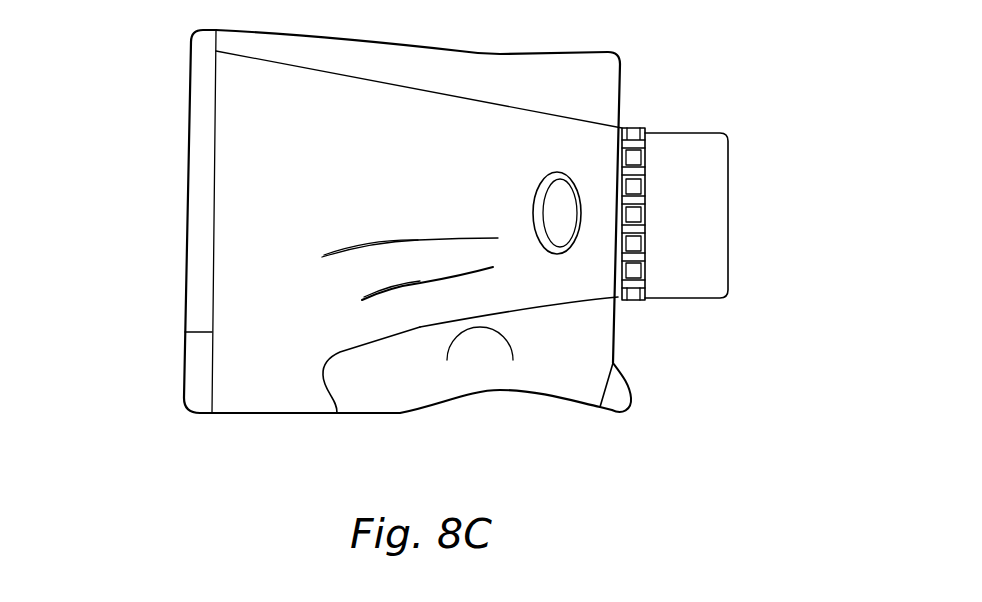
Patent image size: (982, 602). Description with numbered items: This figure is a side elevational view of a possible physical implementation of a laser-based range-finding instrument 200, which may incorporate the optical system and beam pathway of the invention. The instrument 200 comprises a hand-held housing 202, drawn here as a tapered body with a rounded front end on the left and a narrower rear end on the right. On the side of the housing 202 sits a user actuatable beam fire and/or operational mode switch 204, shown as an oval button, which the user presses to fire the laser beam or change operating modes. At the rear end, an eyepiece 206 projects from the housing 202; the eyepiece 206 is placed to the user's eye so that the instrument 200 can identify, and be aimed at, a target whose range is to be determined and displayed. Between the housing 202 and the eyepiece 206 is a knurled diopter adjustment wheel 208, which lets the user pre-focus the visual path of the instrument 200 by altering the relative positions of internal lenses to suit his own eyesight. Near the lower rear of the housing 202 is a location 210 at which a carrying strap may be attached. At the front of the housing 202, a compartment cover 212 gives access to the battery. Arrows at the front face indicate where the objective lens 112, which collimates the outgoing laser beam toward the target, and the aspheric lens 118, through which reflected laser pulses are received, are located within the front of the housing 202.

The range-finding instrument 200 is at (551, 473).
The hand-held housing 202 is at (423, 48).
The user actuatable beam fire and/or operational mode switch 204 is at (550, 210).
The eyepiece 206 is at (771, 235).
The diopter adjustment wheel 208 is at (634, 129).
The carrying strap attachment location 210 is at (629, 393).
The compartment cover 212 is at (184, 380).
The objective lens 112 is at (140, 102).
The aspheric lens 118 is at (138, 283).